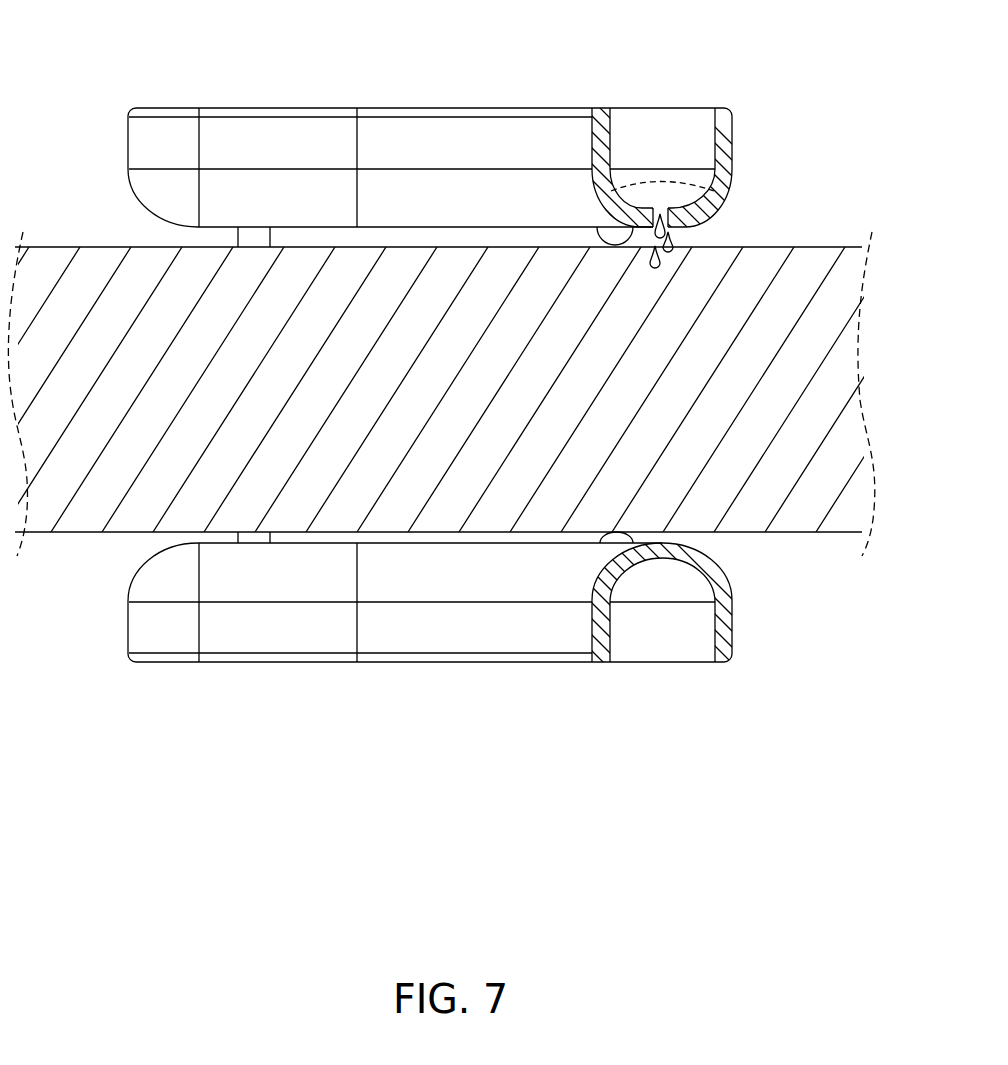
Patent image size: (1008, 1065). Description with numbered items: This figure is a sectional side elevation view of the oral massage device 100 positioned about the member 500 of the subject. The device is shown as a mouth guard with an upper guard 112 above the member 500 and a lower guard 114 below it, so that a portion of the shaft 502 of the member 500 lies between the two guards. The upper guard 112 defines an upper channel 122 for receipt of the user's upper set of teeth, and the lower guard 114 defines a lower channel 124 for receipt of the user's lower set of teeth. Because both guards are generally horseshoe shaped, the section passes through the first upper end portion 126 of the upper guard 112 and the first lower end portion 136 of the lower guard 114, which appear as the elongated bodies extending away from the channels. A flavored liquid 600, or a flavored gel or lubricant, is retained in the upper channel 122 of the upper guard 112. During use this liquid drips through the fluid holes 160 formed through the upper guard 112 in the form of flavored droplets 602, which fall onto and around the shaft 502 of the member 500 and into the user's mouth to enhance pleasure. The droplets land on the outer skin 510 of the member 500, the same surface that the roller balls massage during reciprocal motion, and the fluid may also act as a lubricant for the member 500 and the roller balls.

The oral massage device 100 is at (263, 68).
The member 500 is at (100, 222).
The first upper end portion 126 is at (514, 138).
The flavored liquid 600 is at (652, 190).
The upper channel 122 is at (680, 133).
The upper guard 112 is at (732, 135).
The fluid holes 160 is at (706, 209).
The outer skin 510 is at (815, 245).
The flavored droplets 602 is at (673, 250).
The shaft 502 is at (750, 510).
The lower guard 114 is at (732, 620).
The lower channel 124 is at (660, 645).
The first lower end portion 136 is at (497, 633).